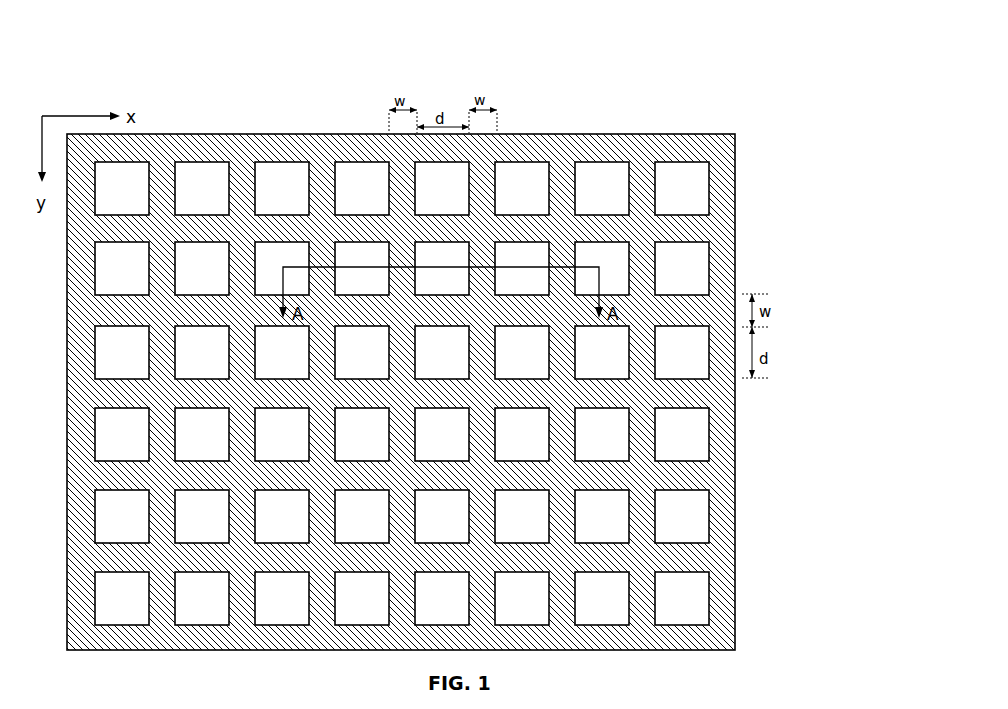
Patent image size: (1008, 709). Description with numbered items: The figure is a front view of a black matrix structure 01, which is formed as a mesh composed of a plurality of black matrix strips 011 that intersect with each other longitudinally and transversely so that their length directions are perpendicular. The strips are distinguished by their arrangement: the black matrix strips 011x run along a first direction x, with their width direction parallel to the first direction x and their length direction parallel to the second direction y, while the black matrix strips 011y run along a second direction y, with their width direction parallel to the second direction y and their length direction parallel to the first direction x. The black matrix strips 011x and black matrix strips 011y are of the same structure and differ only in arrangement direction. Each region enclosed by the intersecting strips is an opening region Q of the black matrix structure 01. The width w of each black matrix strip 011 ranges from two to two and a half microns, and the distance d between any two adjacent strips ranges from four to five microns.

The black matrix structure 01 is at (196, 40).
The black matrix strip 011 is at (467, 343).
The black matrix strip arranged along the first direction x 011x is at (561, 180).
The black matrix strip arranged along the second direction y 011y is at (696, 148).
The opening region Q is at (276, 180).